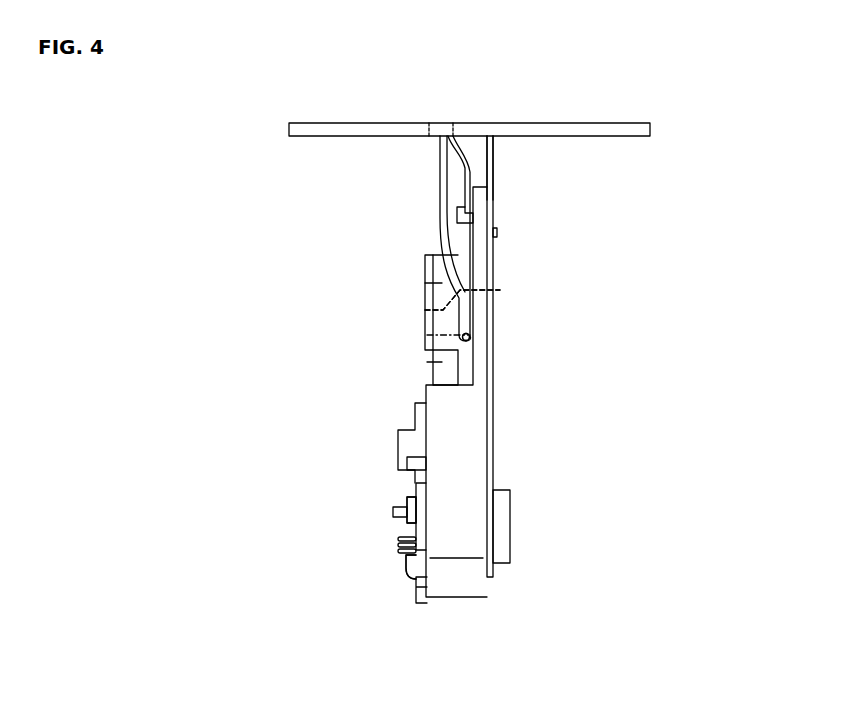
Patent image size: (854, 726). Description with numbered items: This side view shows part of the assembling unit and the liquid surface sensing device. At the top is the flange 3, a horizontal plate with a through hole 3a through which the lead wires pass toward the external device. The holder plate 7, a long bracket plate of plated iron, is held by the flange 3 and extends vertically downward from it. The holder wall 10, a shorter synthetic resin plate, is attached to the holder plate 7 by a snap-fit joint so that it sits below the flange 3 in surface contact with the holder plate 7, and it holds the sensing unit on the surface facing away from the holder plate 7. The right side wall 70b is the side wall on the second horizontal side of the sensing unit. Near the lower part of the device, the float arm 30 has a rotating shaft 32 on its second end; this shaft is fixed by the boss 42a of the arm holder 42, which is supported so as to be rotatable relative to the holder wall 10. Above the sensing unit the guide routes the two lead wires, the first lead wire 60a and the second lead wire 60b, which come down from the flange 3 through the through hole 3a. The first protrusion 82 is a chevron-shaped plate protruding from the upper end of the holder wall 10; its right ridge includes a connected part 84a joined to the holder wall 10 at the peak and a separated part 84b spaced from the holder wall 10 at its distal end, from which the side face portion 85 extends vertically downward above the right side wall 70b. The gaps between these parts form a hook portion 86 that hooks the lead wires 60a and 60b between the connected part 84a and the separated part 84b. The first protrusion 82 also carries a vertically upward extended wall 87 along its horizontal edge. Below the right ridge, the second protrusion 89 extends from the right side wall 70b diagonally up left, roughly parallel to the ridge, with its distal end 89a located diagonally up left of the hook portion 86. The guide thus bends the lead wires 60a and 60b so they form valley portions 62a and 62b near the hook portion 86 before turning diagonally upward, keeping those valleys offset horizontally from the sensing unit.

The flange 3 is at (532, 124).
The through hole 3a is at (438, 124).
The holder plate 7 is at (493, 159).
The holder wall 10 is at (487, 253).
The float arm 30 is at (397, 508).
The rotating shaft 32 is at (397, 508).
The arm holder 42 is at (404, 528).
The boss 42a is at (404, 528).
The first lead wire 60a is at (458, 168).
The second lead wire 60b is at (455, 215).
The valley portion 62a is at (470, 338).
The valley portion 62b is at (470, 338).
The right side wall 70b is at (475, 460).
The first protrusion 82 is at (265, 240).
The connected part 84a is at (427, 283).
The separated part 84b is at (427, 335).
The side face portion 85 is at (428, 362).
The hook portion 86 is at (463, 343).
The vertically upward extended wall 87 is at (430, 251).
The second protrusion 89 is at (500, 290).
The distal end 89a is at (500, 290).